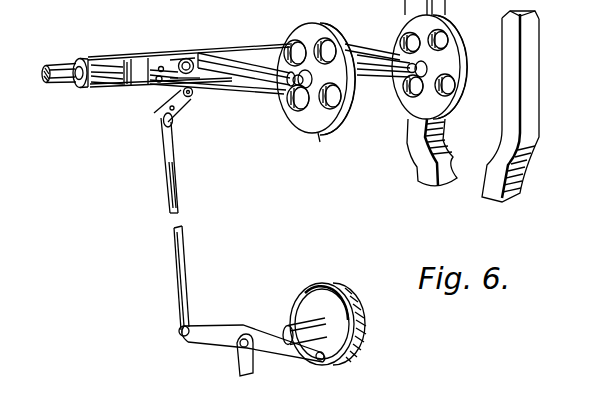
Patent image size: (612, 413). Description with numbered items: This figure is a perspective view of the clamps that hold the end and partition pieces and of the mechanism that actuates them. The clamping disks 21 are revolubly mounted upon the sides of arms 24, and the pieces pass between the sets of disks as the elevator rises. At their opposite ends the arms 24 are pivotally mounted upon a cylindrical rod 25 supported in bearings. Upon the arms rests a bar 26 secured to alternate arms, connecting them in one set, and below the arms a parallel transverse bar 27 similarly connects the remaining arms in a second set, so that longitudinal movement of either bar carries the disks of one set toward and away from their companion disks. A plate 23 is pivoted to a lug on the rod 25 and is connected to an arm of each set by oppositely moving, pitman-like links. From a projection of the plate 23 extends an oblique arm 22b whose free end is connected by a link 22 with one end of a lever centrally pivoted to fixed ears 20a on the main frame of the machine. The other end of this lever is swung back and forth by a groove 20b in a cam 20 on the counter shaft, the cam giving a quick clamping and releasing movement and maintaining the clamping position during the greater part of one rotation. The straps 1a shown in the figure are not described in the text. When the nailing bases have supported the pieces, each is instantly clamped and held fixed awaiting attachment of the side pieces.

The cylindrical rod 25 is at (47, 65).
The bar 26 is at (137, 58).
The arms 24 is at (118, 86).
The plate 23 is at (170, 60).
The parallel transverse bar 27 is at (217, 79).
The oblique arm 22b is at (160, 118).
The link 22 is at (179, 205).
The clamping disks 21 is at (337, 133).
The strap 1a is at (420, 153).
The fixed ears 20a is at (253, 366).
The cam 20 is at (362, 328).
The groove 20b is at (348, 311).